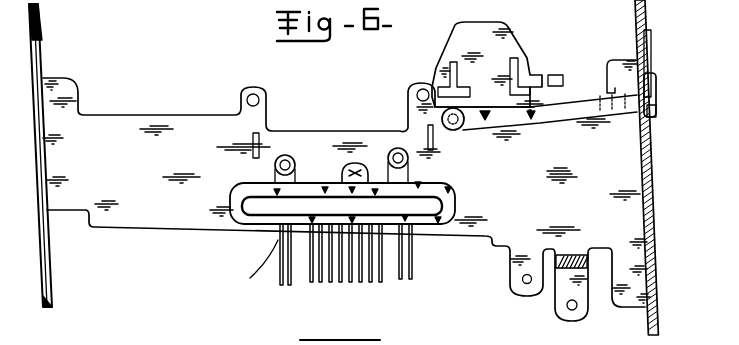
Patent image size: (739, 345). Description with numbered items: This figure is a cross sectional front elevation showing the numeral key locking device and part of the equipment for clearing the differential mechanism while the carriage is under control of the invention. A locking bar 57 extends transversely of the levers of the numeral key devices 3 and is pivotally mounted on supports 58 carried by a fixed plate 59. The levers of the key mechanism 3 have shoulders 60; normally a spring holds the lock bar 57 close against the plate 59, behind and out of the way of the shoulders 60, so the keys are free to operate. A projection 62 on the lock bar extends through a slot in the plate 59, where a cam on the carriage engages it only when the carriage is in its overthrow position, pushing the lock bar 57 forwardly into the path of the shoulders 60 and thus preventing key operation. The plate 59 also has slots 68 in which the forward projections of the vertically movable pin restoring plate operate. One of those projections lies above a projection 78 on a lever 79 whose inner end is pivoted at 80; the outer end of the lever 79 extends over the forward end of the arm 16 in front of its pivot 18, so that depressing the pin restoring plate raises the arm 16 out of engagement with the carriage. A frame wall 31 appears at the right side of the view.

The numeral key devices 3 is at (341, 285).
The arm 16 is at (651, 50).
The pivot 18 is at (657, 86).
The frame wall 31 is at (652, 157).
The locking bar 57 is at (335, 194).
The supports 58 is at (290, 156).
The plate 59 is at (187, 130).
The shoulders 60 is at (278, 240).
The projection 62 is at (243, 226).
The slots 68 is at (445, 95).
The projection 78 is at (560, 106).
The lever 79 is at (548, 122).
The pivot 80 is at (455, 130).